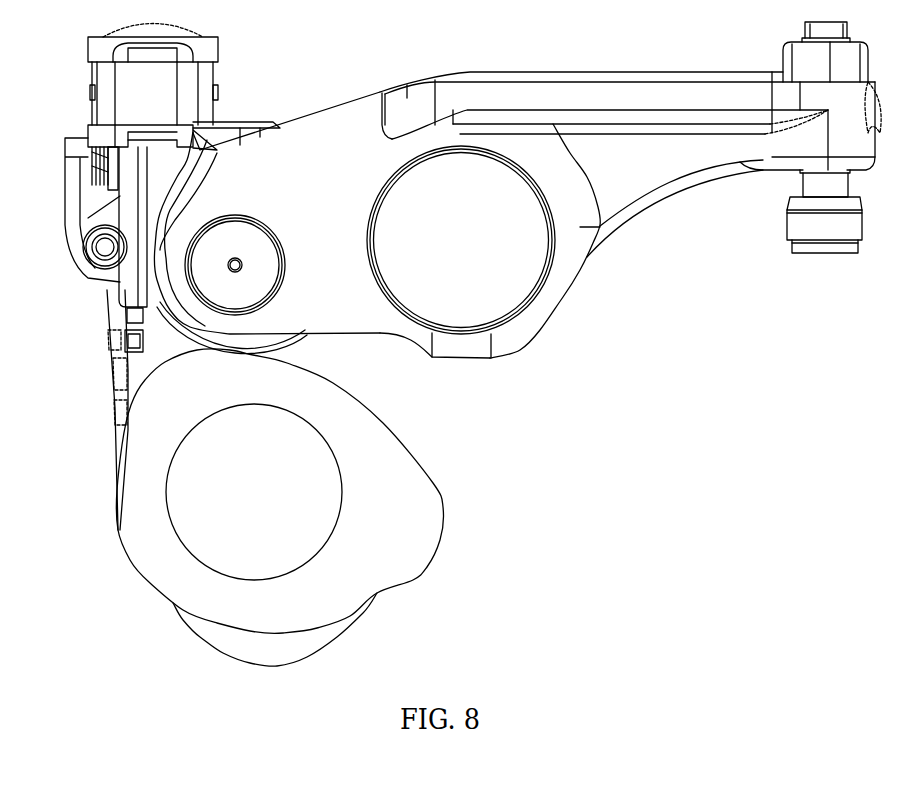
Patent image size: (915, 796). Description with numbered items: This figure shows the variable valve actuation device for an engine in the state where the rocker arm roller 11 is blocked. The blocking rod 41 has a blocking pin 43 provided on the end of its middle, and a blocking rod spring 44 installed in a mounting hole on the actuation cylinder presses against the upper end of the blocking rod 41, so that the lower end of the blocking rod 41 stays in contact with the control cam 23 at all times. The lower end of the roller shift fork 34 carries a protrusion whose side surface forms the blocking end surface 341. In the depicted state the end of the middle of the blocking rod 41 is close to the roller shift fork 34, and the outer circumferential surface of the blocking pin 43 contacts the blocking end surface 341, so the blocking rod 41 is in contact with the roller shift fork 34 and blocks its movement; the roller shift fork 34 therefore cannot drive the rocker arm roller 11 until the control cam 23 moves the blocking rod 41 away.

The rocker arm roller 11 is at (188, 327).
The control cam 23 is at (163, 373).
The roller shift fork 34 is at (133, 267).
The blocking end surface 341 is at (137, 325).
The blocking rod 41 is at (110, 309).
The blocking pin 43 is at (127, 340).
The blocking rod spring 44 is at (92, 160).